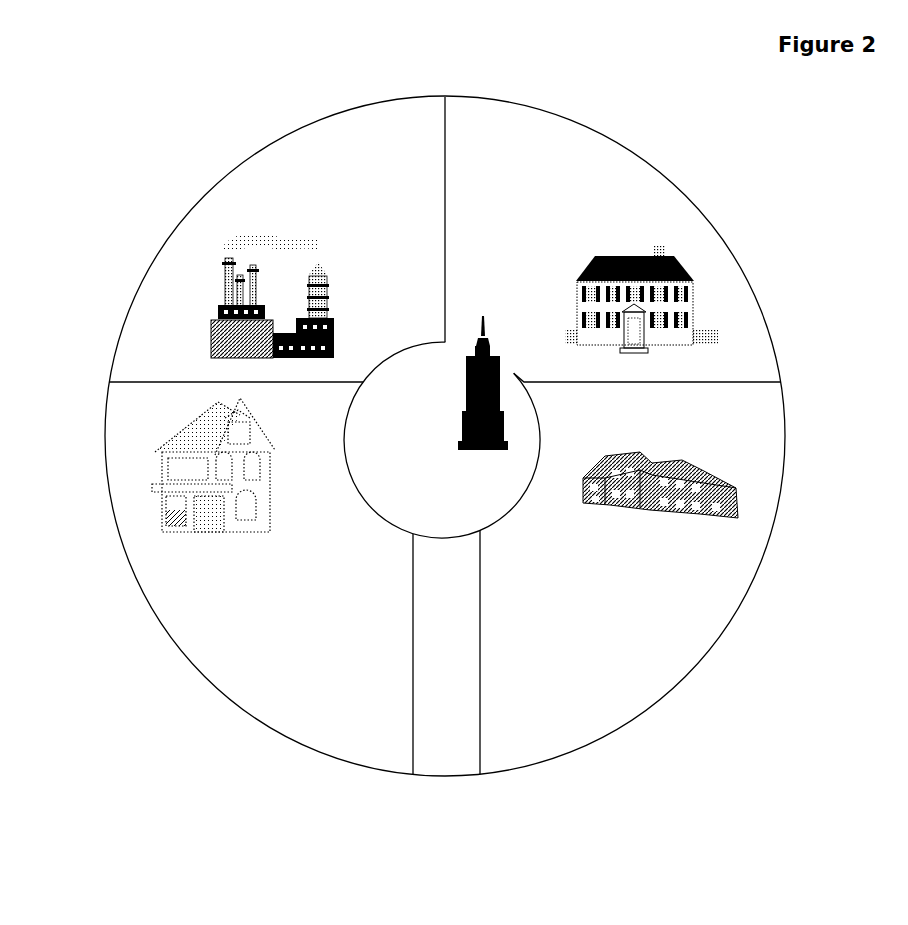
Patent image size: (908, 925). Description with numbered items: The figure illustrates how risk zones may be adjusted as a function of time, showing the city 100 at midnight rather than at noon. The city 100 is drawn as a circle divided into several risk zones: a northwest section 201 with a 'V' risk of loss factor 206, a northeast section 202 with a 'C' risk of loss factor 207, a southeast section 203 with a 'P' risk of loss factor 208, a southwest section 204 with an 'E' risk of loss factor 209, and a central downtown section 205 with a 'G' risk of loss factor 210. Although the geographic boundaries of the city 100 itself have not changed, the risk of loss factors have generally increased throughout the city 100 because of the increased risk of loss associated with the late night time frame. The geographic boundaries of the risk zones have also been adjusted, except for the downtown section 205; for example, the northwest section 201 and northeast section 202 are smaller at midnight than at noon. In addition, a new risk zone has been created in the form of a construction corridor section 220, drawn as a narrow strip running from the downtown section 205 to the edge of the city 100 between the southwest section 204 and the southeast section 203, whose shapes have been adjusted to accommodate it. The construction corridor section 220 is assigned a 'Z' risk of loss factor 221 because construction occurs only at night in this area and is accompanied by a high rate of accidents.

The city 100 is at (222, 182).
The northwest section 201 is at (277, 239).
The northeast section 202 is at (635, 270).
The southeast section 203 is at (555, 652).
The southwest section 204 is at (342, 654).
The downtown section 205 is at (442, 440).
The 'V' risk of loss factor 206 is at (272, 278).
The 'C' risk of loss factor 207 is at (629, 276).
The 'P' risk of loss factor 208 is at (660, 552).
The 'E' risk of loss factor 209 is at (241, 525).
The 'G' risk of loss factor 210 is at (439, 383).
The construction corridor section 220 is at (427, 777).
The 'Z' risk of loss factor 221 is at (467, 777).